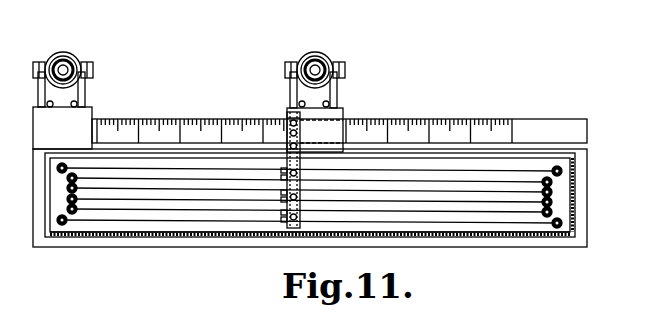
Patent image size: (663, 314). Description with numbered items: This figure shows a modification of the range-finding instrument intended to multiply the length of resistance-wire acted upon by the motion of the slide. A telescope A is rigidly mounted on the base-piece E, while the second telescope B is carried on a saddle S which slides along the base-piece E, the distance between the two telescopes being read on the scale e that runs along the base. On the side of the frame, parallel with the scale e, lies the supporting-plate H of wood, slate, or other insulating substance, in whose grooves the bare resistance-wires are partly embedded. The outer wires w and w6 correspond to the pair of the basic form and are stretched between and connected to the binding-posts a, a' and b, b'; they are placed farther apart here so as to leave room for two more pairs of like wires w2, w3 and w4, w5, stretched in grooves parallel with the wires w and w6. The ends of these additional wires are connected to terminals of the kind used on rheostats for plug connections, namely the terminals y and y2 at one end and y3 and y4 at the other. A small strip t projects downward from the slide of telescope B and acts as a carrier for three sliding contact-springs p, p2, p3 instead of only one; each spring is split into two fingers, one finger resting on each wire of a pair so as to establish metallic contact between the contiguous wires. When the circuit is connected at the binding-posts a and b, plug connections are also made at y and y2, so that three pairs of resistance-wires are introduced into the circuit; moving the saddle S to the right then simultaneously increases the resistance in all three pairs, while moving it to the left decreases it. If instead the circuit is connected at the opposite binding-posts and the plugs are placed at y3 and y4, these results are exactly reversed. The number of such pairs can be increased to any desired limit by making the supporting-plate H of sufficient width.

The telescope A is at (63, 87).
The telescope B is at (315, 88).
The saddle S is at (321, 132).
The base-piece E is at (125, 239).
The supporting-plate H is at (233, 229).
The scale e is at (190, 122).
The sliding contact-spring p is at (286, 152).
The strip t is at (290, 120).
The sliding contact-spring p2 is at (287, 178).
The sliding contact-spring p3 is at (287, 226).
The binding-post a is at (39, 182).
The binding-post b is at (40, 233).
The binding-post a' is at (581, 185).
The binding-post b' is at (581, 235).
The terminal y is at (63, 184).
The terminal y2 is at (63, 207).
The terminal y3 is at (554, 189).
The terminal y4 is at (555, 210).
The resistance-wire w is at (309, 167).
The resistance-wire w2 is at (309, 182).
The resistance-wire w3 is at (309, 190).
The resistance-wire w4 is at (309, 201).
The resistance-wire w5 is at (309, 210).
The resistance-wire w6 is at (309, 222).